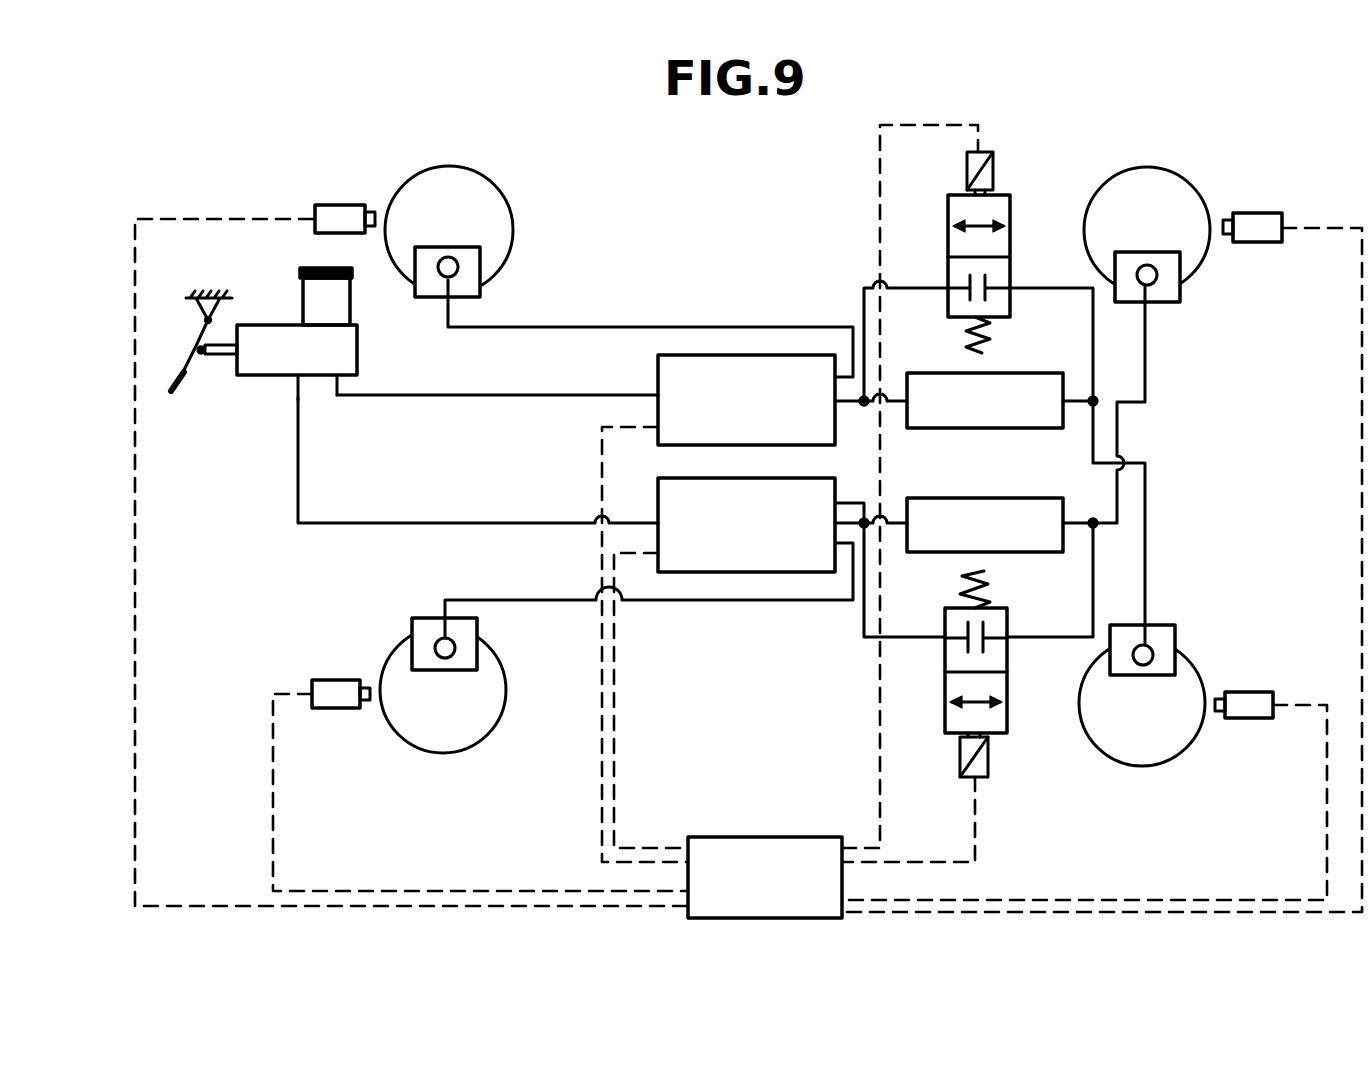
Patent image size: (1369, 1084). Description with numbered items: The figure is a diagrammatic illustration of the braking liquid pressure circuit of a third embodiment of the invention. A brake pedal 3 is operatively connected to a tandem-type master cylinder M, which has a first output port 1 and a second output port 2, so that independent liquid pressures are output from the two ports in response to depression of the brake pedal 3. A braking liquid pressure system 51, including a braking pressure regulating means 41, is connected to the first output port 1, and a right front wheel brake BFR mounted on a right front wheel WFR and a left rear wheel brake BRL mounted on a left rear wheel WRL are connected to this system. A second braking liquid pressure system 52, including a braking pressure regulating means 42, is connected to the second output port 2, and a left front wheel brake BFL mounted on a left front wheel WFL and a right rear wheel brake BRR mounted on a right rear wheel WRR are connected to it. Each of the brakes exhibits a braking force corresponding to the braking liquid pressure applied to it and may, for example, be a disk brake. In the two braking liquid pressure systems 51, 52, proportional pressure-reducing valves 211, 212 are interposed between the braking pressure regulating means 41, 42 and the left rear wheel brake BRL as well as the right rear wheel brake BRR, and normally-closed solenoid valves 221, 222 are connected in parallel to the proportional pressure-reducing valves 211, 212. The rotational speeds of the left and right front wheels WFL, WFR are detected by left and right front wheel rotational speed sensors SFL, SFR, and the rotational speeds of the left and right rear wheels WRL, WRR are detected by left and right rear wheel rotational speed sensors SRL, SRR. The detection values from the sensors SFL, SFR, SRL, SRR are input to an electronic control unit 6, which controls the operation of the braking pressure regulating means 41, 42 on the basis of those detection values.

The master cylinder M is at (268, 325).
The first output port 1 is at (334, 380).
The second output port 2 is at (293, 378).
The brake pedal 3 is at (178, 375).
The braking pressure regulating means 41 is at (760, 419).
The braking pressure regulating means 42 is at (760, 546).
The braking liquid pressure system 51 is at (510, 397).
The braking liquid pressure system 52 is at (400, 521).
The electronic control unit 6 is at (772, 899).
The proportional pressure-reducing valve 211 is at (989, 423).
The proportional pressure-reducing valve 212 is at (989, 544).
The normally-closed solenoid valve 221 is at (1012, 206).
The normally-closed solenoid valve 222 is at (945, 732).
The right front wheel WFR is at (500, 222).
The left front wheel WFL is at (488, 720).
The right rear wheel WRR is at (1180, 190).
The left rear wheel WRL is at (1110, 745).
The right front wheel brake BFR is at (470, 290).
The left front wheel brake BFL is at (415, 628).
The right rear wheel brake BRR is at (1172, 292).
The left rear wheel brake BRL is at (1166, 632).
The right front wheel rotational speed sensor SFR is at (320, 205).
The left front wheel rotational speed sensor SFL is at (343, 710).
The right rear wheel rotational speed sensor SRR is at (1262, 222).
The left rear wheel rotational speed sensor SRL is at (1237, 694).